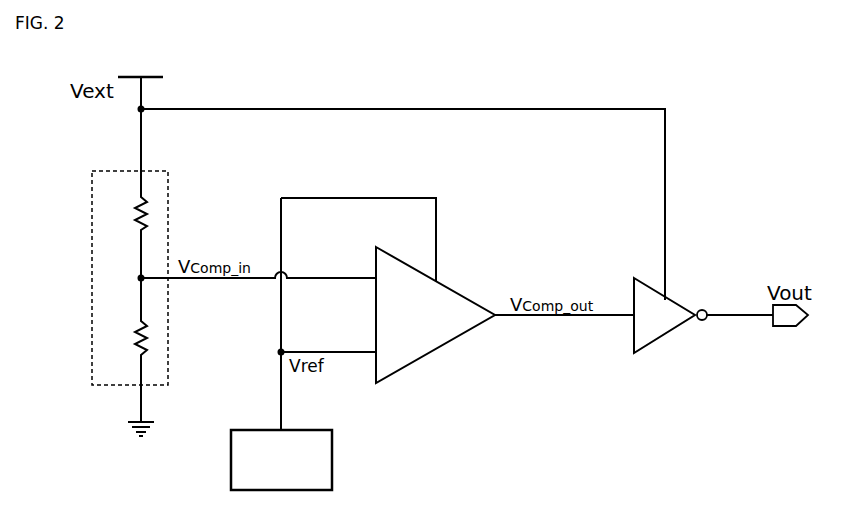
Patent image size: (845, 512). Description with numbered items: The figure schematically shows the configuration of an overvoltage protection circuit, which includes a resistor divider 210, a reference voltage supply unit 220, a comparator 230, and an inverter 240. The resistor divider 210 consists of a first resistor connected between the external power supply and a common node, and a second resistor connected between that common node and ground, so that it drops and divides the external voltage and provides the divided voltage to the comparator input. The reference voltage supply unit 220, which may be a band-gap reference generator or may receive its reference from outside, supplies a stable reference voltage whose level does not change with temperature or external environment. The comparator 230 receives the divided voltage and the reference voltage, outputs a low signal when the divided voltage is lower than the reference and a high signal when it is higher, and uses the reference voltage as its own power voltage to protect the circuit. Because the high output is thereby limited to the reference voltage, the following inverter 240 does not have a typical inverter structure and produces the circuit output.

The resistor divider 210 is at (92, 282).
The reference voltage supply unit 220 is at (332, 459).
The comparator 230 is at (452, 288).
The inverter 240 is at (672, 300).